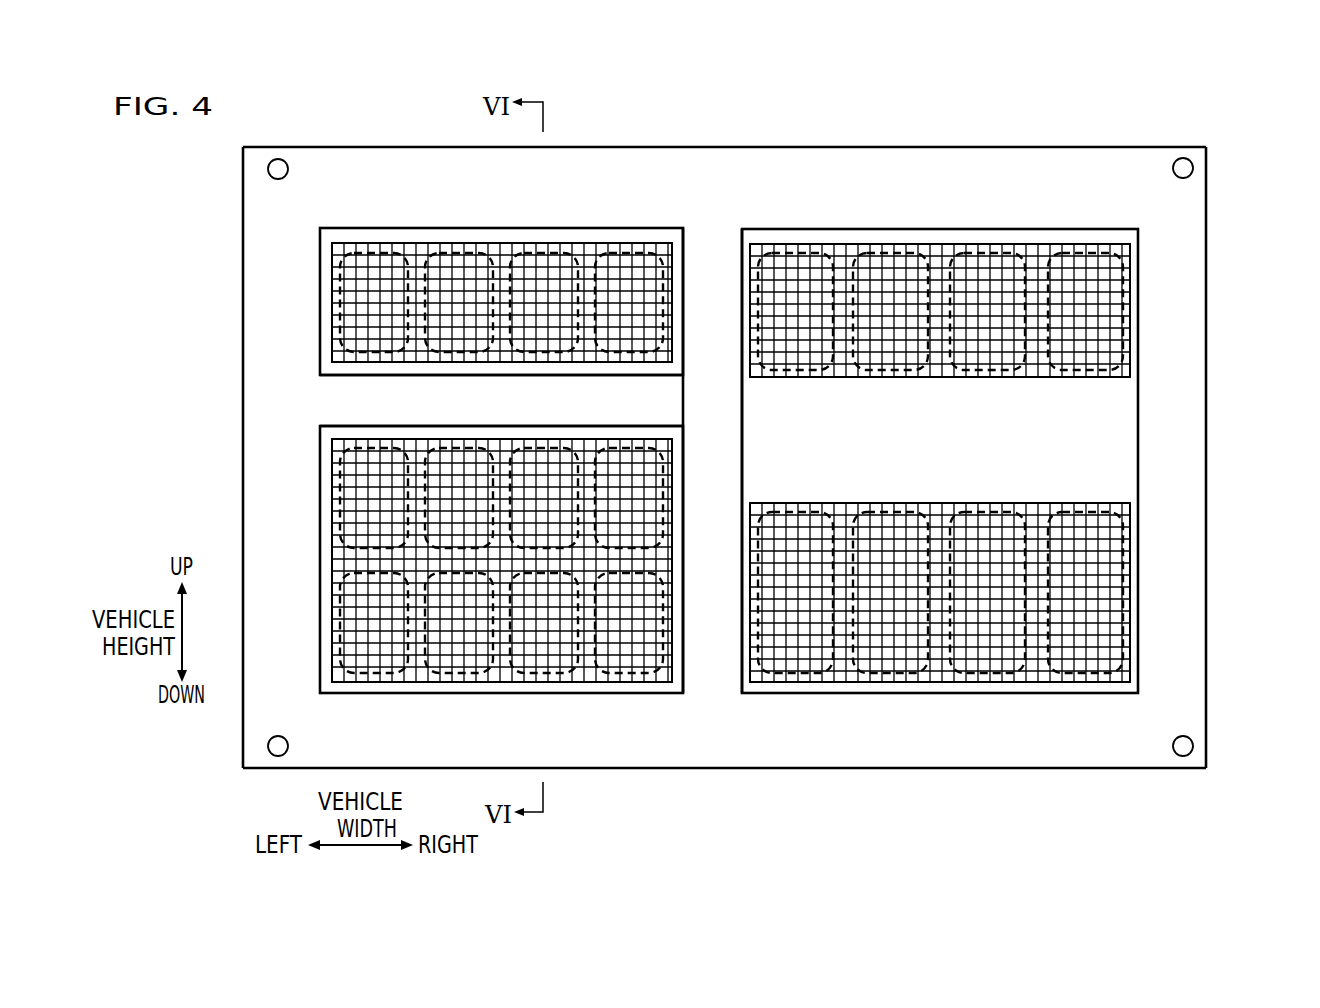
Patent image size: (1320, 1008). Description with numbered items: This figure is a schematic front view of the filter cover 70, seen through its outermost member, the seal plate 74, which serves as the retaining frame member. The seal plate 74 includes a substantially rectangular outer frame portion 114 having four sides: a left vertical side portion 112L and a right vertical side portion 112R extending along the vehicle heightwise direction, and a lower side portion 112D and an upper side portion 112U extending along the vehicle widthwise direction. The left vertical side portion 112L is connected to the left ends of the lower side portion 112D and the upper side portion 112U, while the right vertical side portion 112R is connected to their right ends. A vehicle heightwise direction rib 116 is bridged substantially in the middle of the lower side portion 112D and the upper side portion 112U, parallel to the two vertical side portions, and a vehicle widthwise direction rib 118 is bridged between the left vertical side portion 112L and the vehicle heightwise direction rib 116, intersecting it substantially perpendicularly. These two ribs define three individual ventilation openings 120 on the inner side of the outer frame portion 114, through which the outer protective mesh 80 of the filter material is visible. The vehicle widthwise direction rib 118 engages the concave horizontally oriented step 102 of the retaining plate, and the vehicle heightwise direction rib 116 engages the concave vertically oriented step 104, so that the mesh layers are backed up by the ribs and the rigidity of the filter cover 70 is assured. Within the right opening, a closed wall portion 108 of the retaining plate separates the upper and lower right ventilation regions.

The filter cover 70 is at (913, 91).
The seal plate 74 is at (1212, 189).
The outer protective mesh 80 is at (952, 373).
The horizontally oriented step 102 is at (494, 375).
The vertically oriented step 104 is at (742, 392).
The closed wall portion 108 is at (1122, 447).
The upper side portion 112U is at (788, 167).
The lower side portion 112D is at (860, 752).
The left vertical side portion 112L is at (265, 355).
The right vertical side portion 112R is at (1187, 408).
The outer frame portion 114 is at (1140, 755).
The vehicle heightwise direction rib 116 is at (718, 448).
The vehicle widthwise direction rib 118 is at (347, 403).
The ventilation openings 120 is at (522, 233).